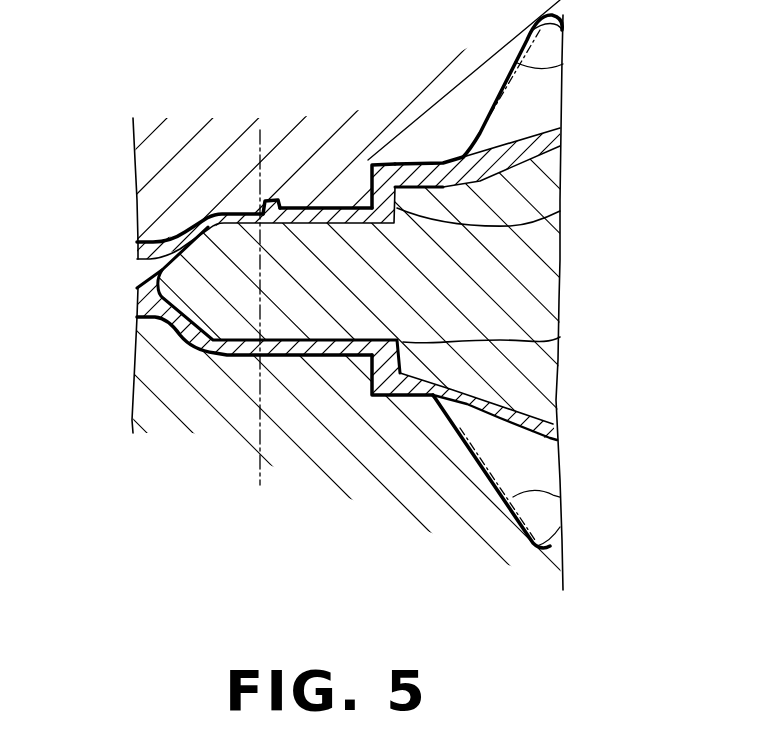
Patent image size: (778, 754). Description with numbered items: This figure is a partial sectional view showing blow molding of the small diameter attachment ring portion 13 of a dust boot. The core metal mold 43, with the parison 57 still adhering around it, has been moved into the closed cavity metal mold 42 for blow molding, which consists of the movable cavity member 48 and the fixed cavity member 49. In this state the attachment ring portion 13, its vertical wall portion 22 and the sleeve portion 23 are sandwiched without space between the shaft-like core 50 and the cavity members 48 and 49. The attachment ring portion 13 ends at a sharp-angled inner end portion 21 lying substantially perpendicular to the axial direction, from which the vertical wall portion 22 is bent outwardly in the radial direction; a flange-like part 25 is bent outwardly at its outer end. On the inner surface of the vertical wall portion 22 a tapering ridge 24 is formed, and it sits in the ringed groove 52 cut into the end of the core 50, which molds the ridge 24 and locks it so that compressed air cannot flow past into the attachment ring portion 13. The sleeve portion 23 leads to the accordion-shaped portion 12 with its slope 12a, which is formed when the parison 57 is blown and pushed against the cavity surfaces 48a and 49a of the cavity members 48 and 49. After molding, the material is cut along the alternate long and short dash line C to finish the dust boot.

The accordion-shaped portion 12 is at (567, 85).
The slope 12a is at (545, 93).
The attachment ring portion 13 is at (389, 377).
The inner end portion 21 is at (560, 339).
The vertical wall portion 22 is at (384, 166).
The sleeve portion 23 is at (422, 170).
The ridge 24 is at (403, 402).
The flange-like part 25 is at (273, 200).
The cavity metal mold for blow molding 42 is at (389, 377).
The core metal mold 43 is at (389, 377).
The movable cavity member for blow molding 48 is at (138, 156).
The cavity surface 48a is at (563, 64).
The fixed cavity member for blow molding 49 is at (136, 398).
The cavity surface 49a is at (560, 497).
The core 50 is at (389, 377).
The ringed groove 52 is at (561, 211).
The parison 57 is at (551, 140).
The alternate long and short dash line C is at (260, 322).